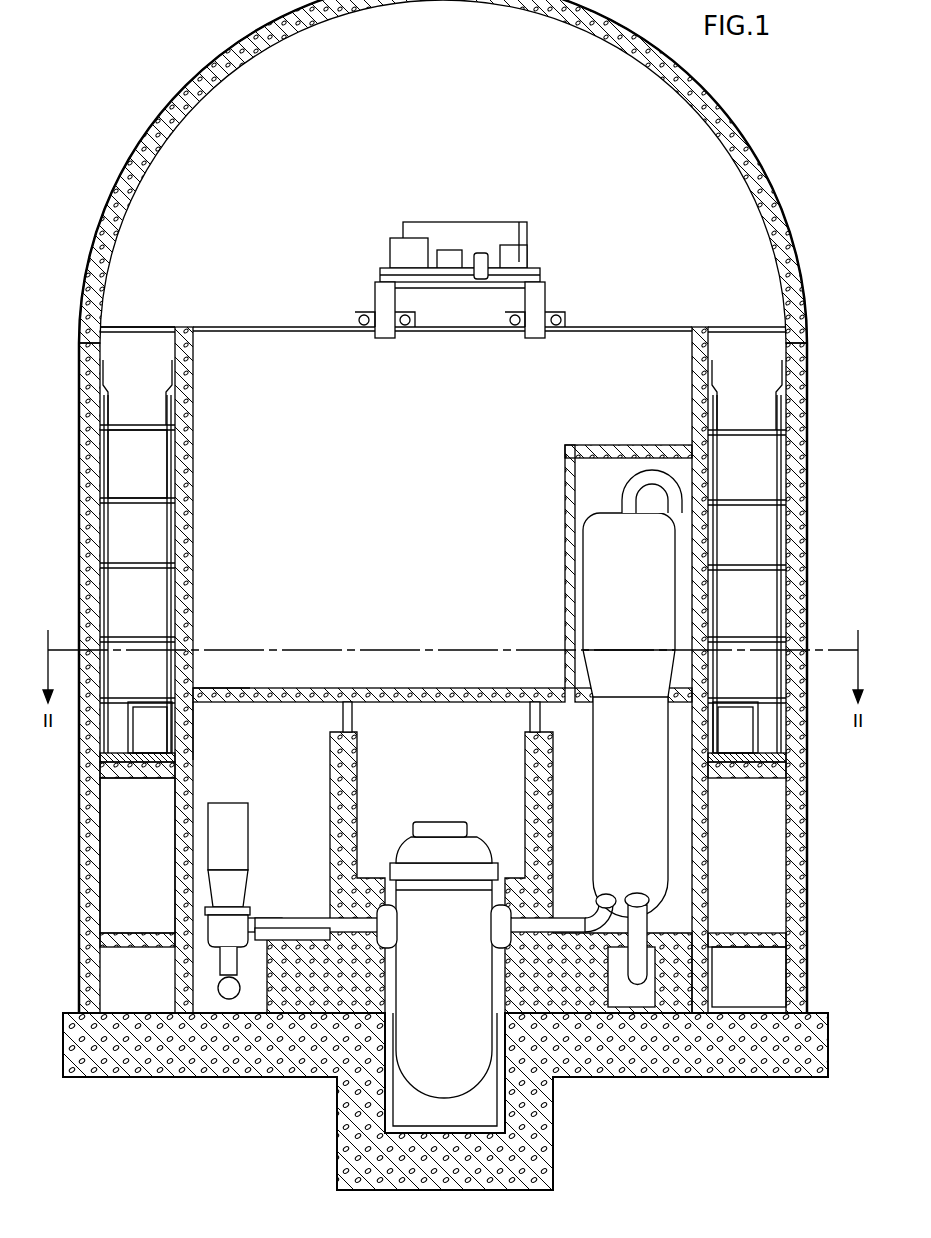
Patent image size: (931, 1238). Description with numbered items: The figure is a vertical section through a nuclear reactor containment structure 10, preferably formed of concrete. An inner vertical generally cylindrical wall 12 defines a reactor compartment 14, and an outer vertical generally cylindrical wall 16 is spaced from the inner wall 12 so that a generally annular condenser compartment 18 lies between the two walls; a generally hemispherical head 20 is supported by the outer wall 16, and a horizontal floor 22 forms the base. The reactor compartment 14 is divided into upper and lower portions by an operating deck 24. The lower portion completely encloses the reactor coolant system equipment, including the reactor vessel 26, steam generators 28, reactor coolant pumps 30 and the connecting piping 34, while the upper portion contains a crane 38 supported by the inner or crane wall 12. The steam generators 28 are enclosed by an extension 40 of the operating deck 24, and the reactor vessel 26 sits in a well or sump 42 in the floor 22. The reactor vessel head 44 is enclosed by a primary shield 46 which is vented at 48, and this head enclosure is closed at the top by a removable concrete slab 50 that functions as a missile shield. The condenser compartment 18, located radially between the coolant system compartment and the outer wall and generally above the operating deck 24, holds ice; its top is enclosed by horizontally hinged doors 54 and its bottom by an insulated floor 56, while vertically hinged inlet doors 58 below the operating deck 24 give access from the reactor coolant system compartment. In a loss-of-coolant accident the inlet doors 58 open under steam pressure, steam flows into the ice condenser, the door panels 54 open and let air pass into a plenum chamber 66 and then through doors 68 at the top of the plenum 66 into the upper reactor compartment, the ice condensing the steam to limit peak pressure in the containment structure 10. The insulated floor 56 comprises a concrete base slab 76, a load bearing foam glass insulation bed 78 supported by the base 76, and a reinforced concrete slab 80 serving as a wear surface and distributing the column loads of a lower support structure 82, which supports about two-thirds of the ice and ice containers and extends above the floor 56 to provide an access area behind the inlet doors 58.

The reactor containment structure 10 is at (61, 305).
The inner vertical generally cylindrical wall 12 is at (211, 551).
The reactor compartment 14 is at (382, 559).
The outer vertical generally cylindrical wall 16 is at (79, 551).
The condenser compartment 18 is at (122, 541).
The generally hemispherical head 20 is at (184, 101).
The horizontal floor 22 is at (310, 932).
The operating deck 24 is at (243, 688).
The reactor vessel 26 is at (424, 1001).
The steam generators 28 is at (603, 779).
The reactor coolant pumps 30 is at (250, 820).
The connecting piping 34 is at (632, 483).
The crane 38 is at (510, 283).
The extension of the operating deck 40 is at (565, 553).
The well or sump 42 is at (410, 1108).
The reactor vessel head 44 is at (480, 851).
The primary shield 46 is at (358, 800).
The vents 48 is at (358, 725).
The removable concrete slab 50 is at (345, 688).
The horizontally hinged doors 54 is at (151, 425).
The insulated floor 56 is at (100, 772).
The vertically hinged inlet doors 58 is at (195, 732).
The plenum chamber 66 is at (190, 390).
The doors 68 is at (160, 327).
The concrete base slab 76 is at (150, 779).
The load bearing foam glass insulation bed 78 is at (100, 765).
The reinforced concrete slab 80 is at (104, 757).
The lower support structure 82 is at (141, 739).